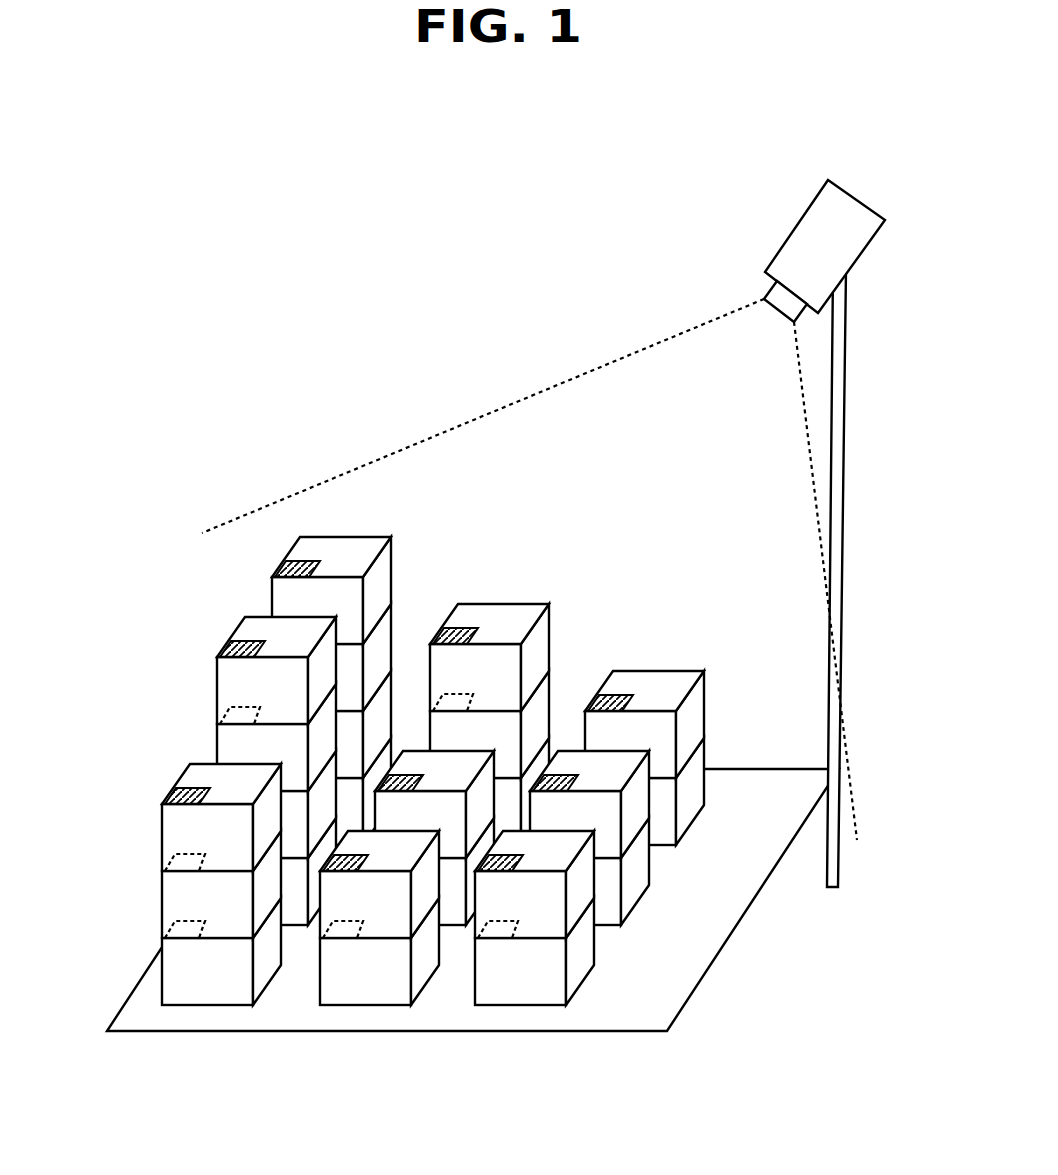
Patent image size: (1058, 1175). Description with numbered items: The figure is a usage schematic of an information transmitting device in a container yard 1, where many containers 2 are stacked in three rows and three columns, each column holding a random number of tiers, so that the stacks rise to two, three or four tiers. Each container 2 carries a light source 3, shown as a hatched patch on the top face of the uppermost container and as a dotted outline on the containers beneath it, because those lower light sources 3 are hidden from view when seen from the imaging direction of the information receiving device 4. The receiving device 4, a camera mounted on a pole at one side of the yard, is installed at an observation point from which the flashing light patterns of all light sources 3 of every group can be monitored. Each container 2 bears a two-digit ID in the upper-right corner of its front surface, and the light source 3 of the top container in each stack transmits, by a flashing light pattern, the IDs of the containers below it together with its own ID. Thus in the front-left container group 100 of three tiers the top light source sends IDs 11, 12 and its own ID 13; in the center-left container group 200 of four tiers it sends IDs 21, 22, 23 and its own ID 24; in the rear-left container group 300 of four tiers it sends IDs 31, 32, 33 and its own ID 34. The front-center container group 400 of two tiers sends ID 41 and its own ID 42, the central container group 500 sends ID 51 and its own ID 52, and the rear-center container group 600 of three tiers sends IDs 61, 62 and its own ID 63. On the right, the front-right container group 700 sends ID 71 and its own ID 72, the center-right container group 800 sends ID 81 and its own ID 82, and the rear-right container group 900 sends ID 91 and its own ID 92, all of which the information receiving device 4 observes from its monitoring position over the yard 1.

The container yard 1 is at (177, 1031).
The container 2 is at (169, 884).
The light source 3 is at (166, 797).
The information receiving device 4 is at (784, 244).
The front-left container group 100 is at (169, 863).
The center-left container group 200 is at (237, 766).
The rear-left container group 300 is at (294, 660).
The front-center container group 400 is at (368, 971).
The center container group 500 is at (434, 745).
The rear-center container group 600 is at (492, 692).
The front-right container group 700 is at (524, 971).
The center-right container group 800 is at (672, 853).
The rear-right container group 900 is at (649, 727).
The container ID 11 is at (221, 951).
The container ID 12 is at (221, 884).
The container ID 13 is at (221, 817).
The container ID 21 is at (276, 871).
The container ID 22 is at (276, 804).
The container ID 23 is at (276, 737).
The container ID 24 is at (276, 670).
The container ID 31 is at (331, 791).
The container ID 32 is at (331, 724).
The container ID 33 is at (331, 657).
The container ID 34 is at (331, 590).
The container ID 41 is at (379, 951).
The container ID 42 is at (379, 884).
The container ID 51 is at (434, 871).
The container ID 52 is at (434, 804).
The container ID 61 is at (489, 791).
The container ID 62 is at (489, 724).
The container ID 63 is at (489, 657).
The container ID 71 is at (534, 951).
The container ID 72 is at (534, 884).
The container ID 81 is at (589, 871).
The container ID 82 is at (589, 804).
The container ID 91 is at (644, 791).
The container ID 92 is at (644, 724).